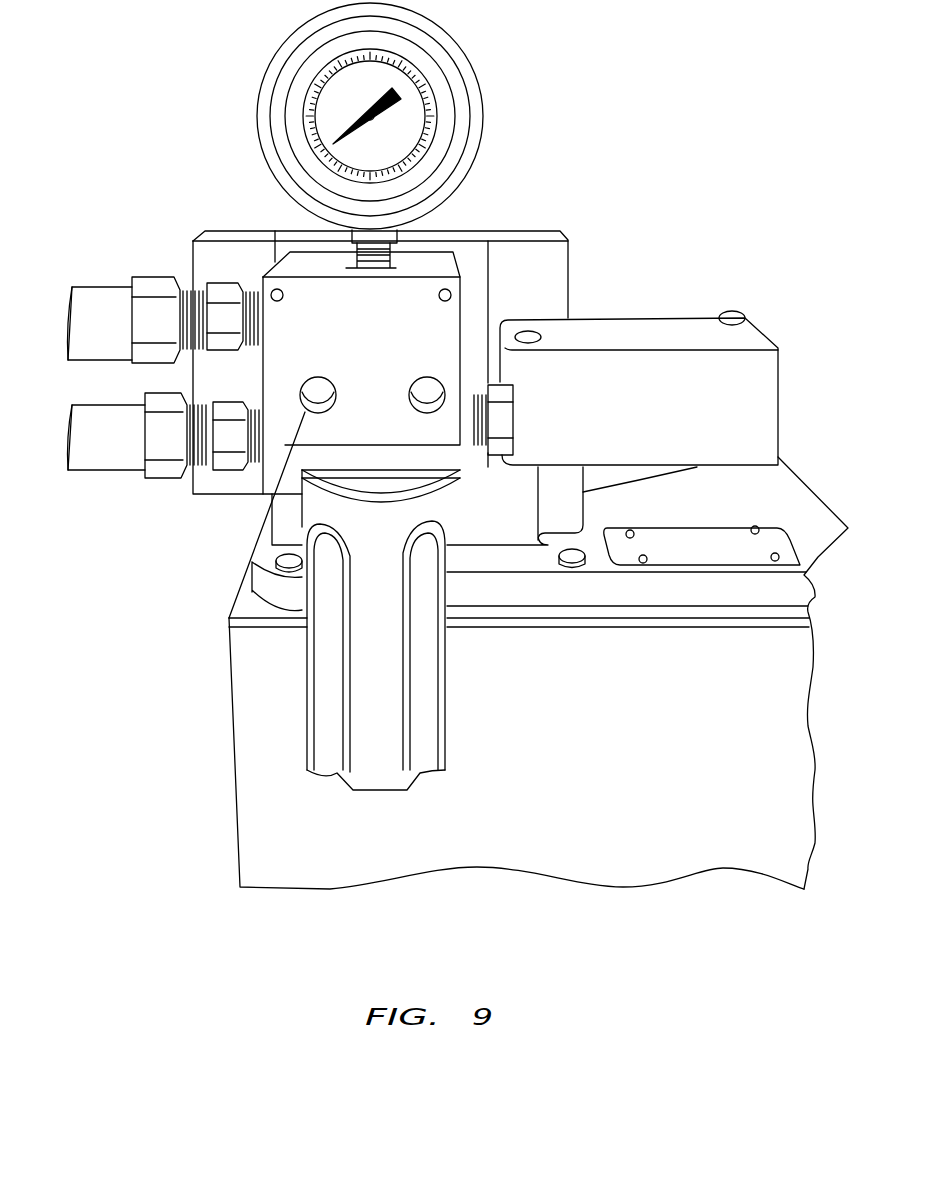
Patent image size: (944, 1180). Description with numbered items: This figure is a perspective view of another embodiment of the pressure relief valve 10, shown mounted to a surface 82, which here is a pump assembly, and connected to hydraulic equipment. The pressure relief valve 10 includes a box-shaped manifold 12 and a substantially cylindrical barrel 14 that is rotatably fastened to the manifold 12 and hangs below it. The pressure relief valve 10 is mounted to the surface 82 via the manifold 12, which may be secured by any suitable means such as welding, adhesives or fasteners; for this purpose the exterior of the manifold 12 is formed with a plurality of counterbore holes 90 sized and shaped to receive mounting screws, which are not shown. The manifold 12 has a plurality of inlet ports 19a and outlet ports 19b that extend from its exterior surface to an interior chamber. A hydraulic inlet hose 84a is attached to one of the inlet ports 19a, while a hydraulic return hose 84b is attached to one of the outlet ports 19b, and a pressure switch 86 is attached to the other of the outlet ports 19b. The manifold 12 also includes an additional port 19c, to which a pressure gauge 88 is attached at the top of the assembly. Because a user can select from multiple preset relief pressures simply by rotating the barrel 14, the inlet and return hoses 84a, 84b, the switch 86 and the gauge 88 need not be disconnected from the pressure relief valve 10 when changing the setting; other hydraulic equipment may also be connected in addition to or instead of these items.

The pressure relief valve 10 is at (504, 597).
The manifold 12 is at (410, 427).
The barrel 14 is at (327, 680).
The inlet port 19a is at (258, 321).
The outlet port 19b is at (256, 421).
The port 19c is at (350, 268).
The surface 82 is at (520, 265).
The hydraulic inlet hose 84a is at (113, 305).
The hydraulic return hose 84b is at (168, 447).
The pressure switch 86 is at (705, 377).
The pressure gauge 88 is at (403, 127).
The counterbore holes 90 is at (410, 410).